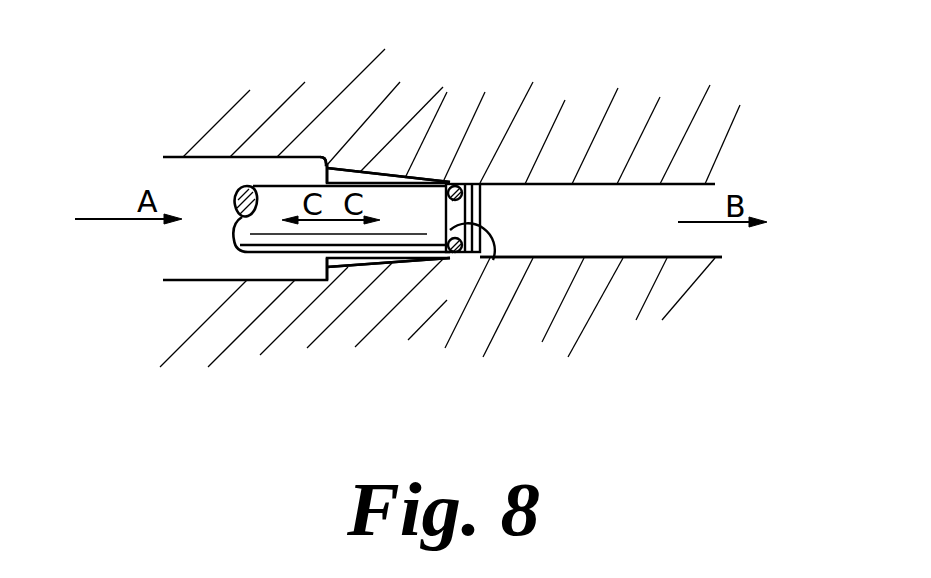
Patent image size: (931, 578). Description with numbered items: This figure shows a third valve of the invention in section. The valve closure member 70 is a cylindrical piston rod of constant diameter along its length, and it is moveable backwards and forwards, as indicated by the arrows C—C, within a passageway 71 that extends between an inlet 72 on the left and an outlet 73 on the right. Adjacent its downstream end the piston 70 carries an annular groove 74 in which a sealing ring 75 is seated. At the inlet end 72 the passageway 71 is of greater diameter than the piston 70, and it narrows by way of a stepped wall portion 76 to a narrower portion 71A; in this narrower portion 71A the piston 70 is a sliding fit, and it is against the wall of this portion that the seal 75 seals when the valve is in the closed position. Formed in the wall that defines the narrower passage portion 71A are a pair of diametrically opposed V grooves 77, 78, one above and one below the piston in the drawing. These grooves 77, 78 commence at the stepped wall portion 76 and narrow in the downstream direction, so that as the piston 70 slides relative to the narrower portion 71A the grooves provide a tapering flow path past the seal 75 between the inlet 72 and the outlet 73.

The valve closure member 70 is at (282, 197).
The passageway 71 is at (247, 262).
The narrower portion 71A is at (557, 238).
The inlet 72 is at (182, 237).
The outlet 73 is at (692, 244).
The annular groove 74 is at (488, 260).
The sealing ring 75 is at (462, 185).
The stepped wall portion 76 is at (323, 163).
The V groove 77 is at (342, 177).
The V groove 78 is at (348, 263).